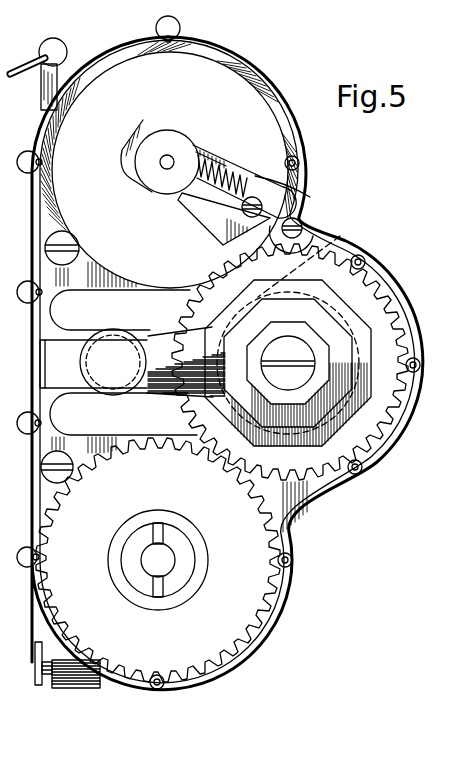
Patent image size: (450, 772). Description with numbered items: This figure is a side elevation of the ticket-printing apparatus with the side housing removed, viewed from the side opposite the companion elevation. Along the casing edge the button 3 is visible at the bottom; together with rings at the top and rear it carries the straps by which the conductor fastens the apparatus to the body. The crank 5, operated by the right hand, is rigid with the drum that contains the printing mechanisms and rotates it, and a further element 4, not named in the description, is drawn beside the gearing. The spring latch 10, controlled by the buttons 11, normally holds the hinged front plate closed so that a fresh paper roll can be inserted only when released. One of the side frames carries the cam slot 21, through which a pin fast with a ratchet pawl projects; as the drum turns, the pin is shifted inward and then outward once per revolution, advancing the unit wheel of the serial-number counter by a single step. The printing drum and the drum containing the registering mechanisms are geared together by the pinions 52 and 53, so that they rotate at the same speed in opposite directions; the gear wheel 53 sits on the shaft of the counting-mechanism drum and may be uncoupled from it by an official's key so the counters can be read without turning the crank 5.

The button 3 is at (57, 665).
The gear wheel 4 is at (327, 342).
The crank 5 is at (165, 316).
The spring latch 10 is at (272, 205).
The buttons 11 is at (177, 143).
The cam slot 21 is at (332, 242).
The pinion 52 is at (387, 410).
The pinion (gear wheel) 53 is at (265, 546).